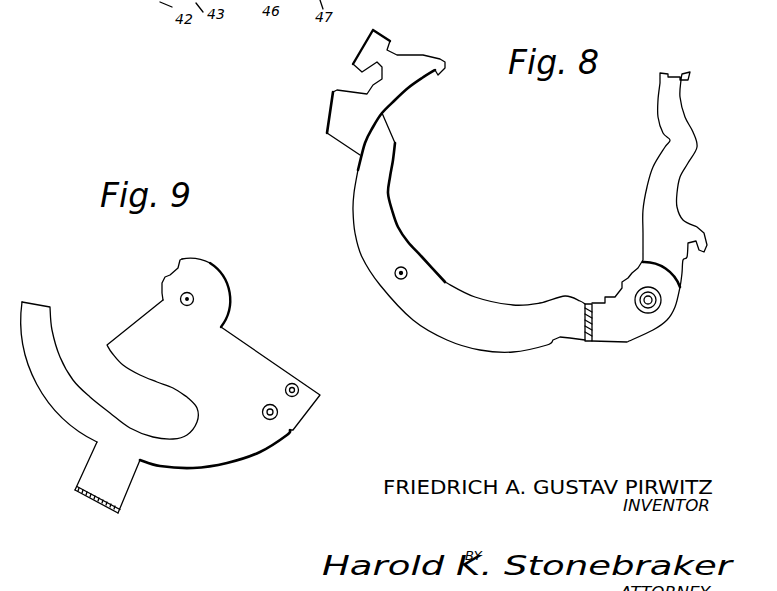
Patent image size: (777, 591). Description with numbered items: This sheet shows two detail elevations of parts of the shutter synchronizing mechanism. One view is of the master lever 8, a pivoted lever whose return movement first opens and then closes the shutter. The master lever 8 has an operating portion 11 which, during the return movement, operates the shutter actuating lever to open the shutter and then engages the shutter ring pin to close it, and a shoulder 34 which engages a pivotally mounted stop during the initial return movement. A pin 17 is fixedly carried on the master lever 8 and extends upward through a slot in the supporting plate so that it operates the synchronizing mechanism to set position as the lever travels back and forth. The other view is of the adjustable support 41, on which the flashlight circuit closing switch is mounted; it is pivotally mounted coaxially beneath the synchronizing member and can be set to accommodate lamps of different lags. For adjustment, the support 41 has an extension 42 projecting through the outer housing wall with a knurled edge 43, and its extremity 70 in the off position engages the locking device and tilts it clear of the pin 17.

In FIG. 8, the master lever 8 is at (560, 333).
In FIG. 8, the operating portion 11 is at (350, 112).
In FIG. 8, the shoulder 34 is at (333, 131).
In FIG. 8, the pin 17 is at (407, 272).
In FIG. 9, the adjustable support 41 is at (237, 367).
In FIG. 9, the extremity 70 is at (181, 264).
In FIG. 9, the extension 42 is at (122, 478).
In FIG. 9, the knurled edge 43 is at (103, 507).